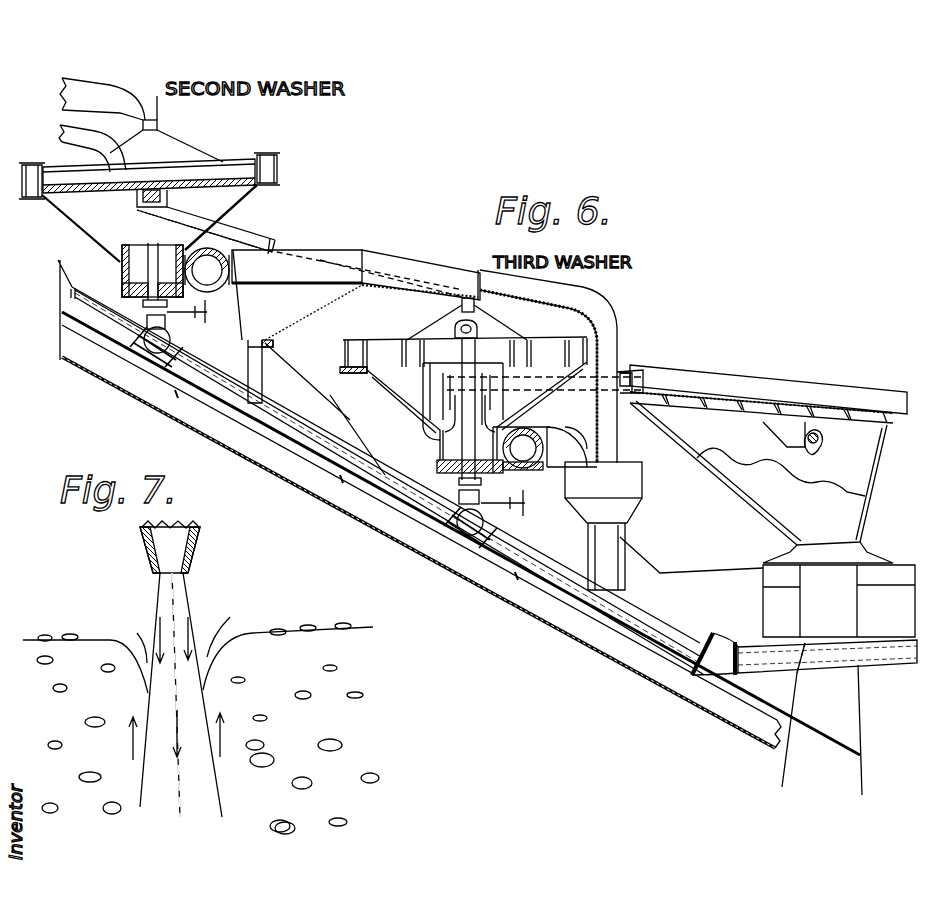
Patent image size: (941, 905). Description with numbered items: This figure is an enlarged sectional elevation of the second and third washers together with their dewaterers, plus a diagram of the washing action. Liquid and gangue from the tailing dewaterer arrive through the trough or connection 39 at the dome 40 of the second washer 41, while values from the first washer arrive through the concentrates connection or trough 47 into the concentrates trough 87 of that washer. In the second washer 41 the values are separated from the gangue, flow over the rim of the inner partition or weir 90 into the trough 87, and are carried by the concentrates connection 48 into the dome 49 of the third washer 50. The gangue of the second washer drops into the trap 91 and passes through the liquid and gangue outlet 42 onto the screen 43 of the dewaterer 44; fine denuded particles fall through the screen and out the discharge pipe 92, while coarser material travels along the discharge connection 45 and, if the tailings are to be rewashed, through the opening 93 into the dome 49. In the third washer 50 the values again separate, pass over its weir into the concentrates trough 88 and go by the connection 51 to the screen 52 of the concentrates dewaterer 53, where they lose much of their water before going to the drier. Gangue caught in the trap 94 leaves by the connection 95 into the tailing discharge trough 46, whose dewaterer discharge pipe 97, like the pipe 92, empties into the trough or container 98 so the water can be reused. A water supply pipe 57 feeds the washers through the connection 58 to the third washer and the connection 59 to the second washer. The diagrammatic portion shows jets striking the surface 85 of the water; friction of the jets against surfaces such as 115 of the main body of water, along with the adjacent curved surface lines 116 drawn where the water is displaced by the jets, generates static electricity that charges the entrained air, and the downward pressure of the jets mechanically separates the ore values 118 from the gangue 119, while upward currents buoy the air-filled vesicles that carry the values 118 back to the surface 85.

In FIG. 6, the trough or connection 39 is at (90, 90).
In FIG. 6, the dome 40 is at (157, 124).
In FIG. 6, the second washer 41 is at (223, 160).
In FIG. 6, the liquid and gangue outlet 42 is at (223, 227).
In FIG. 6, the screen 43 is at (292, 283).
In FIG. 6, the dewaterer 44 is at (345, 250).
In FIG. 6, the discharge connection 45 is at (413, 262).
In FIG. 6, the tailing discharge trough 46 is at (648, 485).
In FIG. 6, the concentrates connection or trough 47 is at (60, 137).
In FIG. 6, the concentrates connection or trough 48 is at (272, 243).
In FIG. 6, the dome 49 is at (485, 340).
In FIG. 6, the third washer 50 is at (553, 372).
In FIG. 6, the concentrates connection or trough 51 is at (615, 330).
In FIG. 6, the screen 52 is at (753, 395).
In FIG. 6, the concentrates dewaterer 53 is at (833, 390).
In FIG. 6, the water supply pipe 57 is at (330, 435).
In FIG. 6, the connection 58 is at (455, 513).
In FIG. 6, the connection 59 is at (170, 340).
In FIG. 7, the surface of the water 85 is at (370, 628).
In FIG. 6, the concentrates trough 87 is at (280, 170).
In FIG. 6, the concentrates trough 88 is at (352, 358).
In FIG. 6, the inner partition or weir 90 is at (258, 155).
In FIG. 6, the trap 91 is at (138, 268).
In FIG. 6, the discharge pipe 92 is at (262, 378).
In FIG. 6, the opening 93 is at (458, 305).
In FIG. 6, the trap 94 is at (455, 443).
In FIG. 6, the connection 95 is at (497, 450).
In FIG. 6, the dewaterer discharge pipe 97 is at (628, 545).
In FIG. 6, the trough or container 98 is at (120, 385).
In FIG. 7, the surface of the main body of water 115 is at (140, 778).
In FIG. 7, the surface of material 116 is at (185, 630).
In FIG. 7, the ore values 118 is at (305, 694).
In FIG. 7, the gangue 119 is at (275, 762).